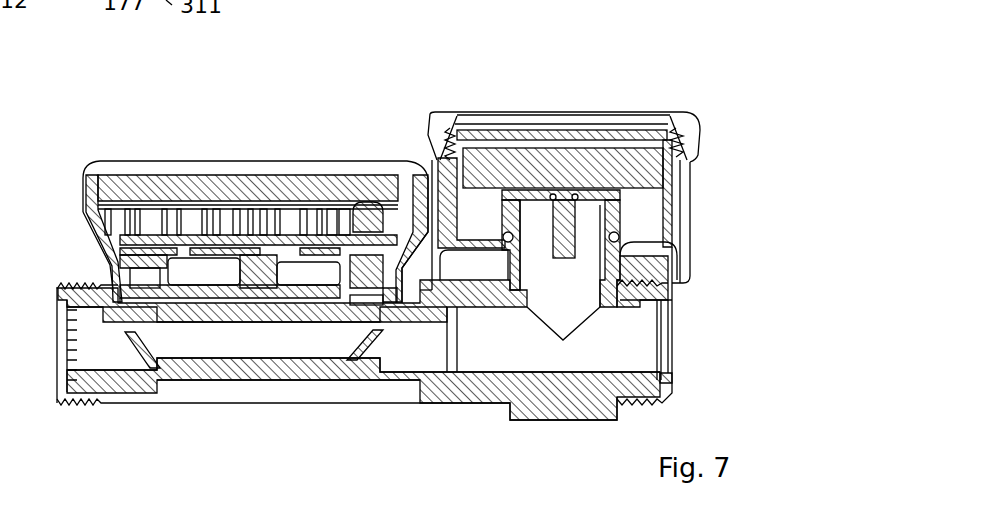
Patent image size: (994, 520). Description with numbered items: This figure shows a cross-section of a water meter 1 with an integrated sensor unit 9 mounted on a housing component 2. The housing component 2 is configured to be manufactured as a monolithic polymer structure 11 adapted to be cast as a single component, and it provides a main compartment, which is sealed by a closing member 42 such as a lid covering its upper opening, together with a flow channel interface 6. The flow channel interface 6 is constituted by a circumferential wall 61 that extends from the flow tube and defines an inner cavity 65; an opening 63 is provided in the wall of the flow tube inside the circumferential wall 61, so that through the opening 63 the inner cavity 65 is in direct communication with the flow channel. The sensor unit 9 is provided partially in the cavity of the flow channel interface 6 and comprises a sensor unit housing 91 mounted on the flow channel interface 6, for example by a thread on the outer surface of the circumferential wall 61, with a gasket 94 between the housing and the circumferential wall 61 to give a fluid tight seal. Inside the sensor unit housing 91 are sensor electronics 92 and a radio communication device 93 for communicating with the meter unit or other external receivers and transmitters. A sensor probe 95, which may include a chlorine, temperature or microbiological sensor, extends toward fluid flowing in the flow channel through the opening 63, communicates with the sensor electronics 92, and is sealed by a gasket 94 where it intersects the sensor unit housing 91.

The sensor module 1 is at (134, 129).
The housing component 2 is at (463, 383).
The monolithic polymer structure 11 is at (508, 387).
The sensor unit 9 is at (647, 78).
The closing member 42 is at (690, 121).
The sensor unit housing 91 is at (687, 197).
The sensor electronics 92 is at (625, 170).
The radio communication device 93 is at (493, 177).
The sensor probe 95 is at (565, 245).
The flow channel interface 6 is at (612, 232).
The gasket 94 is at (625, 246).
The opening 63 is at (547, 303).
The circumferential wall 61 is at (590, 265).
The inner cavity 65 is at (667, 300).